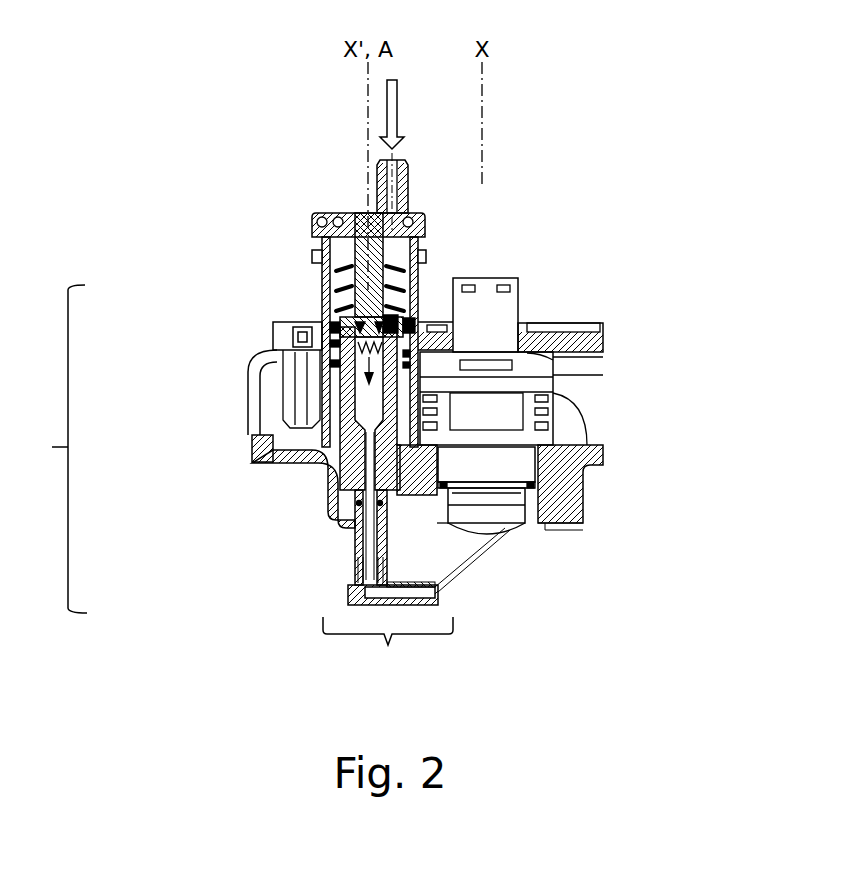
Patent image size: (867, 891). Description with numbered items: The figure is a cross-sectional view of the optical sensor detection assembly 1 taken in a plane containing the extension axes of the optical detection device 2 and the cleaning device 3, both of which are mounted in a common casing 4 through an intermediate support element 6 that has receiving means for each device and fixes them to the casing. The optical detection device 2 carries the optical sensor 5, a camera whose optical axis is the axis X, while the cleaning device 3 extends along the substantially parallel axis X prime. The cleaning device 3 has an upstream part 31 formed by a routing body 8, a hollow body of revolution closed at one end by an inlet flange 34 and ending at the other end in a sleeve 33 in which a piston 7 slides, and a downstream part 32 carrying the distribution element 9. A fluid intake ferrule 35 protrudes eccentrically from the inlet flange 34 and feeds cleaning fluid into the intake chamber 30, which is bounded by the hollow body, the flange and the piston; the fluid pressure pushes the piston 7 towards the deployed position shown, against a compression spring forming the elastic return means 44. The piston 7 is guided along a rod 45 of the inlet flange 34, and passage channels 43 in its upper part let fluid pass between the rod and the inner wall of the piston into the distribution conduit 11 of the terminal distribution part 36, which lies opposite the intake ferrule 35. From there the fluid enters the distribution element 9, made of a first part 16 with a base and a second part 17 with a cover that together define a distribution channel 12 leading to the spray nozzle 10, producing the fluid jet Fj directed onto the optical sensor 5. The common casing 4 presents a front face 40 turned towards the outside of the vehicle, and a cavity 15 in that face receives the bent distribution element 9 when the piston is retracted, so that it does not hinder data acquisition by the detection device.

The optical sensor detection assembly 1 is at (170, 192).
The optical detection device 2 is at (507, 410).
The cleaning device 3 is at (59, 449).
The common casing 4 is at (612, 450).
The optical sensor 5 is at (492, 533).
The intermediate support element 6 is at (570, 312).
The piston 7 is at (345, 457).
The routing body 8 is at (322, 280).
The distribution element 9 is at (388, 651).
The spray nozzle 10 is at (446, 609).
The distribution conduit 11 is at (349, 495).
The distribution channel 12 is at (403, 609).
The cavity 15 is at (434, 540).
The first part 16 is at (344, 573).
The second part 17 is at (342, 603).
The intake chamber 30 is at (330, 215).
The upstream part 31 is at (228, 310).
The downstream part 32 is at (228, 597).
The sleeve 33 is at (330, 372).
The inlet flange 34 is at (342, 206).
The fluid intake ferrule 35 is at (421, 160).
The terminal distribution part 36 is at (344, 548).
The front face 40 is at (568, 542).
The passage channels 43 is at (413, 325).
The elastic return means 44 is at (420, 262).
The rod 45 is at (392, 246).
The fluid jet Fj is at (492, 537).